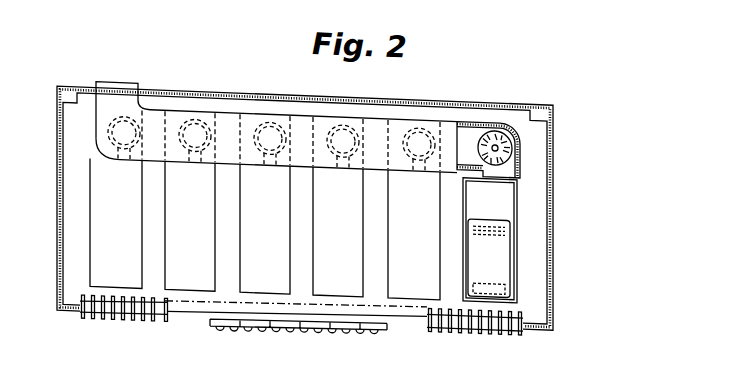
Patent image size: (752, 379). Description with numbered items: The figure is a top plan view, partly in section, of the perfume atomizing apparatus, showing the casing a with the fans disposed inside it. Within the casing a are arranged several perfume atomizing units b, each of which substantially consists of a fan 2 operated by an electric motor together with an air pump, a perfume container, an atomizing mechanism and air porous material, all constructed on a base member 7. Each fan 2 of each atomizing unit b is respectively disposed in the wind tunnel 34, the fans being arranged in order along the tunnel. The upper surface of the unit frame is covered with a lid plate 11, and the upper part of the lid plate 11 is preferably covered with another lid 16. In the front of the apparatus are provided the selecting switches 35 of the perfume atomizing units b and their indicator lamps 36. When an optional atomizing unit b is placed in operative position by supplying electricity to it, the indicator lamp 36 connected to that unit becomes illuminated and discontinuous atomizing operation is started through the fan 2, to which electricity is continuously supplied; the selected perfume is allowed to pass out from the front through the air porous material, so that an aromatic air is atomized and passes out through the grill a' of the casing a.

The casing a is at (291, 207).
The grill a' is at (301, 334).
The atomizing unit b is at (265, 228).
The fan 2 is at (495, 121).
The base member 7 is at (518, 167).
The lid plate 11 is at (505, 193).
The lid 16 is at (503, 243).
The wind tunnel 34 is at (232, 113).
The selecting switches 35 is at (217, 319).
The indicator lamps 36 is at (232, 320).